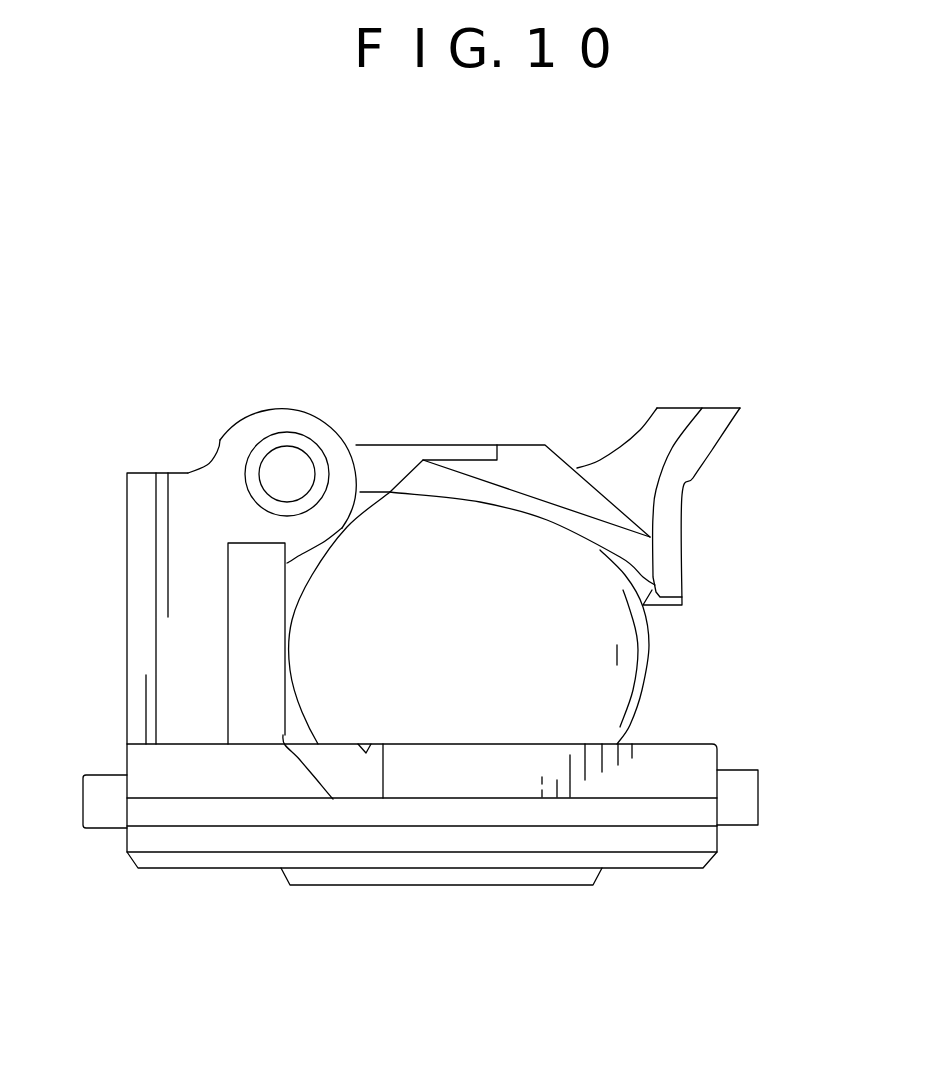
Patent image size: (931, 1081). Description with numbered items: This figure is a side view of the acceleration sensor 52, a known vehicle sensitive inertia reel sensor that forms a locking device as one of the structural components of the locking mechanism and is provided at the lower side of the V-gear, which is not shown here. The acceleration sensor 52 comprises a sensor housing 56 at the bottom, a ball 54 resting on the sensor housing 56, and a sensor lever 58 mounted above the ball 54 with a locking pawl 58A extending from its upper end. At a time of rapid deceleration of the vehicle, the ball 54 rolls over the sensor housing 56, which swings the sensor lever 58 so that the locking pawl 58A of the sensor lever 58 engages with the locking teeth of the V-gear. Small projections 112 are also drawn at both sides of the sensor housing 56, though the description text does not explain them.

The acceleration sensor 52 is at (470, 355).
The ball 54 is at (617, 693).
The sensor housing 56 is at (660, 857).
The sensor lever 58 is at (521, 444).
The locking pawl 58A is at (715, 420).
The projection 112 is at (92, 793).